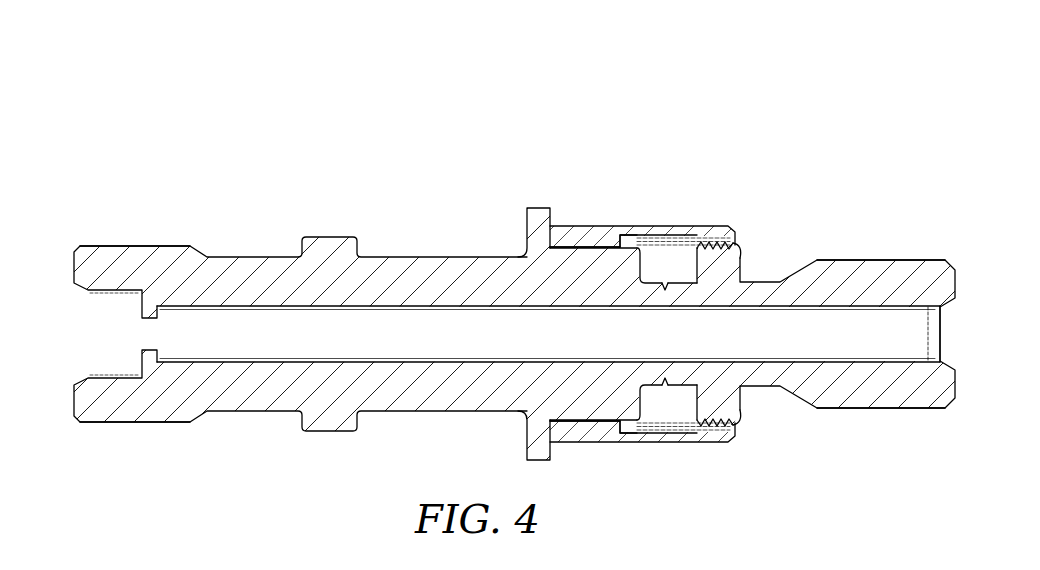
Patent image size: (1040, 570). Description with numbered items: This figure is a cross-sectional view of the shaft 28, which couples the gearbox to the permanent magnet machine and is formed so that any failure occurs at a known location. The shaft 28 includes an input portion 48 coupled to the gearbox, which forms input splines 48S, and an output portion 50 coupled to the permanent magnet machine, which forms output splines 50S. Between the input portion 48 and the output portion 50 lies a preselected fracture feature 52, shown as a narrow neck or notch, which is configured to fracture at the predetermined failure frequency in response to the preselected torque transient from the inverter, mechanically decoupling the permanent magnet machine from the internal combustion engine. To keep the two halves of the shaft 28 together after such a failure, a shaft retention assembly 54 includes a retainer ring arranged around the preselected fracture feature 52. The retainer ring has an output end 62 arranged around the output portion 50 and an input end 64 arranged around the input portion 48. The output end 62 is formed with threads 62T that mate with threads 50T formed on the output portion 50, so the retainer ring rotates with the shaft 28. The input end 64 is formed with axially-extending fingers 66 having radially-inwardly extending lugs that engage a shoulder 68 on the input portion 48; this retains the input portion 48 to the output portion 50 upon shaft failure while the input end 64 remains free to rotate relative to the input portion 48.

The shaft 28 is at (520, 252).
The input portion 48 is at (128, 238).
The input splines 48S is at (142, 245).
The output portion 50 is at (900, 250).
The output splines 50S is at (883, 258).
The threads 50T is at (695, 242).
The preselected fracture feature 52 is at (668, 278).
The shaft retention assembly 54 is at (677, 167).
The output end 62 is at (747, 227).
The threads 62T is at (740, 257).
The input end 64 is at (575, 218).
The axially-extending fingers 66 is at (595, 225).
The shoulder 68 is at (628, 237).